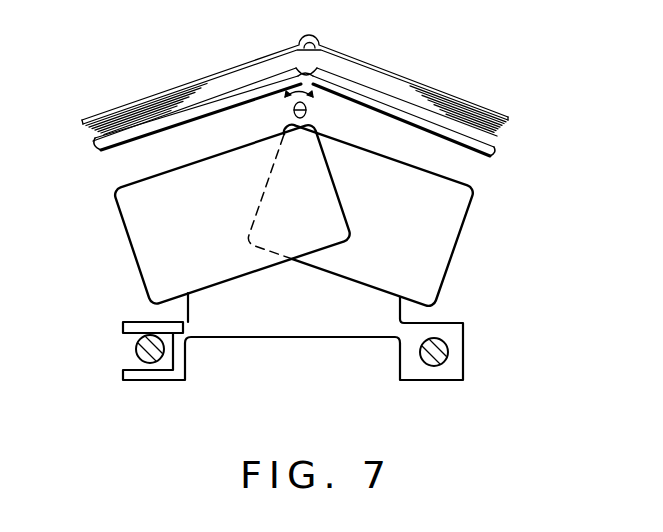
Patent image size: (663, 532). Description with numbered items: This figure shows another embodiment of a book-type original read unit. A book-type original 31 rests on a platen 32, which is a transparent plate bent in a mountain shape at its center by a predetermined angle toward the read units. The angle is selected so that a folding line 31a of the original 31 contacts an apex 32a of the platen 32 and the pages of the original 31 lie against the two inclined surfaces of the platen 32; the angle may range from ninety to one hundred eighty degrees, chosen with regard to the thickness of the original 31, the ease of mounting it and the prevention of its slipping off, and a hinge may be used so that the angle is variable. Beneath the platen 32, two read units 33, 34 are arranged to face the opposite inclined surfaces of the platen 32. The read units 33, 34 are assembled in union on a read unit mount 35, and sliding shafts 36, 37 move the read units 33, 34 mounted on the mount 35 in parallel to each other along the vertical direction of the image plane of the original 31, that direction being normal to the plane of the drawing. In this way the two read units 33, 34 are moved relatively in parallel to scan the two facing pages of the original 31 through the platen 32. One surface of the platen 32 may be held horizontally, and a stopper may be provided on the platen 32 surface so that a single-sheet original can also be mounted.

The book-type original 31 is at (410, 88).
The folding line 31a is at (312, 73).
The platen 32 is at (497, 147).
The apex 32a is at (297, 70).
The read unit 33 is at (140, 240).
The read unit 34 is at (459, 213).
The read unit mount 35 is at (332, 325).
The sliding shaft 36 is at (137, 352).
The sliding shaft 37 is at (449, 343).